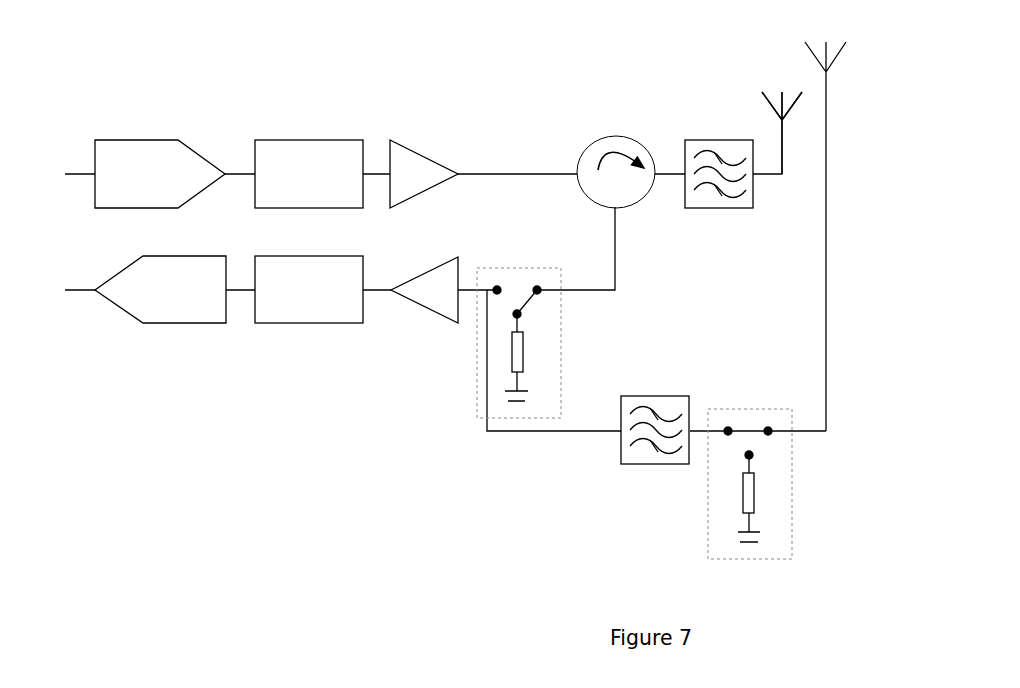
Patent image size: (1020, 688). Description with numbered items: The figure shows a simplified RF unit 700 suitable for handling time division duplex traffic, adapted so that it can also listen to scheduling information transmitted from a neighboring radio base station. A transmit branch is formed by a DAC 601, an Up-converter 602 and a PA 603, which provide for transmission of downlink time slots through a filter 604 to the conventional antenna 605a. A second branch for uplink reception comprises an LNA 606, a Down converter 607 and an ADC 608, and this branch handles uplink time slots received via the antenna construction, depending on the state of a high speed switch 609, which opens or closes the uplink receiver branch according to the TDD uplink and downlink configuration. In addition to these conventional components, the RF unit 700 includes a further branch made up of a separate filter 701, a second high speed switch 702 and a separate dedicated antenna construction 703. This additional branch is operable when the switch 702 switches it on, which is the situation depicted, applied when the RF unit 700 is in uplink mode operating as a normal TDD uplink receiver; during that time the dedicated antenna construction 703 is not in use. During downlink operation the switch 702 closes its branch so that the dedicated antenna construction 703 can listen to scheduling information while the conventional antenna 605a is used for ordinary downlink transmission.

The DAC 601 is at (137, 140).
The Up-converter 602 is at (308, 140).
The PA 603 is at (430, 160).
The filter 604 is at (720, 208).
The conventional antenna 605a is at (782, 142).
The LNA 606 is at (440, 266).
The Down converter 607 is at (308, 323).
The ADC 608 is at (185, 323).
The high speed switch 609 is at (556, 356).
The RF unit 700 is at (479, 300).
The separate filter 701 is at (656, 396).
The second high speed switch 702 is at (793, 510).
The dedicated antenna construction 703 is at (826, 244).